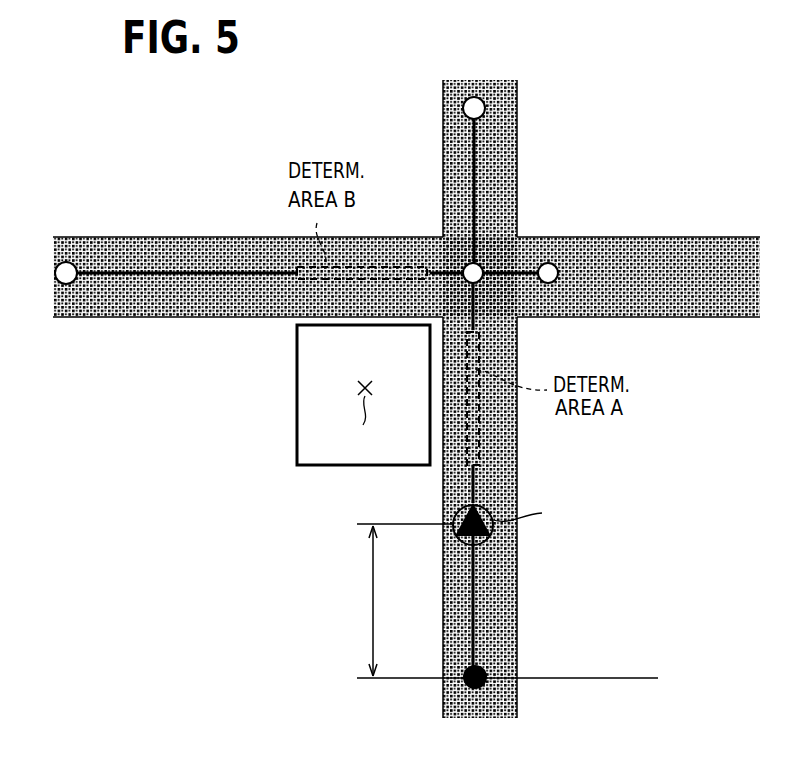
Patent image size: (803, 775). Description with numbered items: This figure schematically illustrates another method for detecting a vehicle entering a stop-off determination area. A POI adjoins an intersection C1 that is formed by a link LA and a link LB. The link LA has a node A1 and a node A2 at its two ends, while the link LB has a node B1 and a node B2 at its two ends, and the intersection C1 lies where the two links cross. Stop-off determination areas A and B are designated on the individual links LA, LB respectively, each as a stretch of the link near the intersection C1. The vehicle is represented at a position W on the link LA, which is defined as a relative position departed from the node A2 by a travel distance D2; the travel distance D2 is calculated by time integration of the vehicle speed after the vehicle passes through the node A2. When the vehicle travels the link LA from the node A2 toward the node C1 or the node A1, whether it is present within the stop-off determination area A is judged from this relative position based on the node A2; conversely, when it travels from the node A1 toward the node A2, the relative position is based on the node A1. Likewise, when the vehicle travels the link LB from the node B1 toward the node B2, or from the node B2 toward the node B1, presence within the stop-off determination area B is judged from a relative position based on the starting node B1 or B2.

The node A1 is at (465, 103).
The node B1 is at (66, 262).
The intersection C1 is at (481, 266).
The node B2 is at (553, 263).
The node A2 is at (468, 690).
The link LA is at (476, 598).
The link LB is at (178, 278).
The position W is at (481, 505).
The travel distance D2 is at (359, 601).
The element POI is at (363, 395).